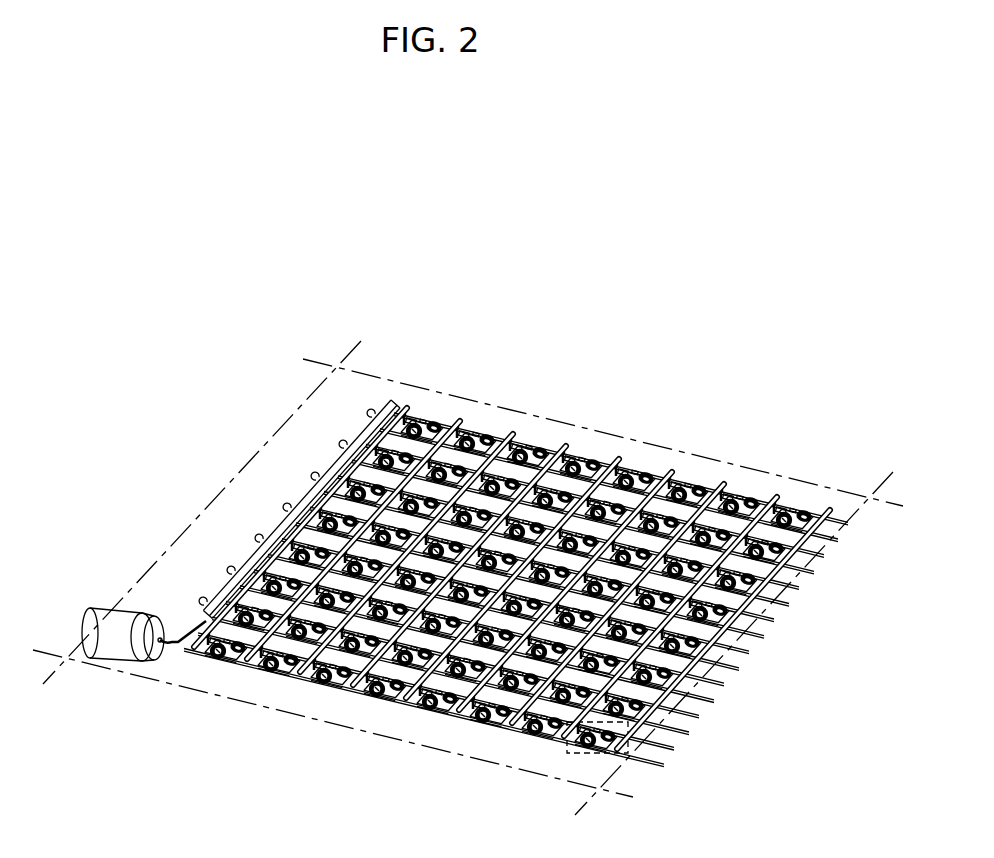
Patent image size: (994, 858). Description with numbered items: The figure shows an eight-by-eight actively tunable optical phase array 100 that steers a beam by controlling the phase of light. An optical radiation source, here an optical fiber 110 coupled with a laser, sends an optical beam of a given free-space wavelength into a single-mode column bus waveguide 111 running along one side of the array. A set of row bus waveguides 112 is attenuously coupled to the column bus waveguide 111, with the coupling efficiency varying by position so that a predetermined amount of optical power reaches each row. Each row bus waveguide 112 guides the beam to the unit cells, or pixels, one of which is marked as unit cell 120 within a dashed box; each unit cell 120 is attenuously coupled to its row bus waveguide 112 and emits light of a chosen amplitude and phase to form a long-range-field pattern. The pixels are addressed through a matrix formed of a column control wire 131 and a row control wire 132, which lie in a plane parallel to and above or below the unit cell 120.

The optical phase array 100 is at (98, 302).
The optical fiber 110 is at (112, 630).
The column bus waveguide 111 is at (322, 492).
The row bus waveguide 112 is at (760, 612).
The unit cell 120 is at (640, 740).
The column control wire 131 is at (405, 407).
The row control wire 132 is at (804, 568).